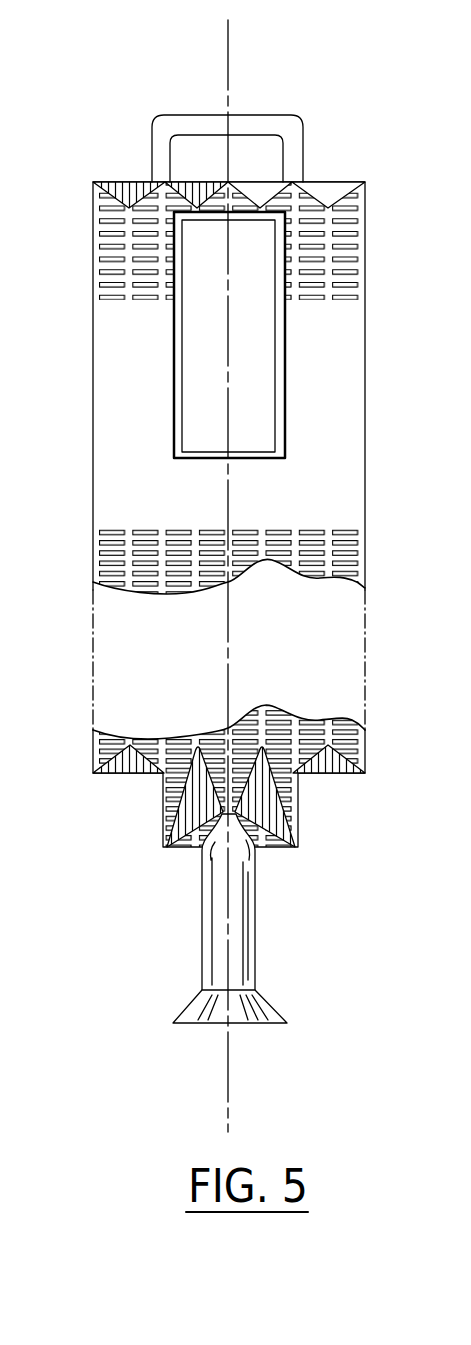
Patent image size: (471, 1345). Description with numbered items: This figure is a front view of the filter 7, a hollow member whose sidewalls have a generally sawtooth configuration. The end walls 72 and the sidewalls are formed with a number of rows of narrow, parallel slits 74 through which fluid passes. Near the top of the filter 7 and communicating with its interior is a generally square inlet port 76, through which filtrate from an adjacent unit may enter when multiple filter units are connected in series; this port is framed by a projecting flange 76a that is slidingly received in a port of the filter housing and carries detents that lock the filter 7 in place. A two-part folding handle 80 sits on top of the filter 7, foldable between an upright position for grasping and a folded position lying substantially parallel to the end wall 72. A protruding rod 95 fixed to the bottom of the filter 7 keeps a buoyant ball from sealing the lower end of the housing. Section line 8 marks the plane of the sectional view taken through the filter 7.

The filter 7 is at (246, 575).
The end wall 72 is at (124, 180).
The slits 74 is at (347, 232).
The inlet port 76 is at (253, 325).
The projecting flange 76a is at (285, 387).
The two-part folding handle 80 is at (301, 134).
The protruding rod 95 is at (237, 958).
The section line 8- 8 is at (233, 22).